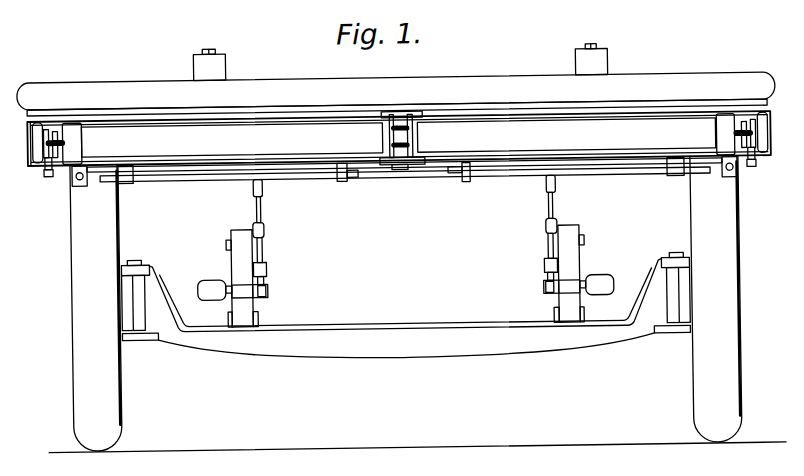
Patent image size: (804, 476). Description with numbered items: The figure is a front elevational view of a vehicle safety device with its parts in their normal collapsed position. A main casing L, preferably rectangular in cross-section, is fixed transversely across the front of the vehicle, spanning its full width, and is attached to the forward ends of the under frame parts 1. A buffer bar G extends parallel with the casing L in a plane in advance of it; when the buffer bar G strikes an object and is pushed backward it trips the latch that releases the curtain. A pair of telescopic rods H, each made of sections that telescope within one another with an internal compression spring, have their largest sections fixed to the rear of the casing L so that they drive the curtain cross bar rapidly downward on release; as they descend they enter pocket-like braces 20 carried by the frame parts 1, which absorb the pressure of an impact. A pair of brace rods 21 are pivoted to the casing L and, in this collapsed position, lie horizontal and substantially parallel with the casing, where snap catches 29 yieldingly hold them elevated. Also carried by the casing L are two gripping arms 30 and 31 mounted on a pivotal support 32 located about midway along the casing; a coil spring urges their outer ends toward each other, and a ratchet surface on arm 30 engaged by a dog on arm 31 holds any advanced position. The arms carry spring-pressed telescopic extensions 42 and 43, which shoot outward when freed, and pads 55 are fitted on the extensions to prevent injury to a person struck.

The buffer bar G is at (303, 94).
The telescopic rods H is at (213, 75).
The main casing L is at (31, 142).
The pad 55 is at (34, 136).
The extension 43 is at (50, 178).
The extension 42 is at (750, 177).
The gripping arm 31 is at (168, 152).
The gripping arm 30 is at (608, 152).
The pivotal support 32 is at (395, 176).
The brace rods 21 is at (493, 175).
The snap catches 29 is at (466, 182).
The under frame parts 1 is at (238, 263).
The pocket-like braces 20 is at (210, 294).